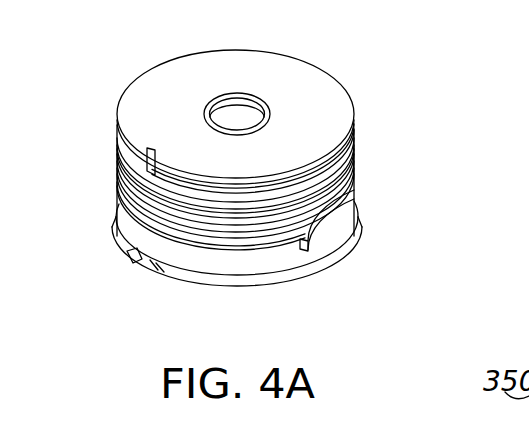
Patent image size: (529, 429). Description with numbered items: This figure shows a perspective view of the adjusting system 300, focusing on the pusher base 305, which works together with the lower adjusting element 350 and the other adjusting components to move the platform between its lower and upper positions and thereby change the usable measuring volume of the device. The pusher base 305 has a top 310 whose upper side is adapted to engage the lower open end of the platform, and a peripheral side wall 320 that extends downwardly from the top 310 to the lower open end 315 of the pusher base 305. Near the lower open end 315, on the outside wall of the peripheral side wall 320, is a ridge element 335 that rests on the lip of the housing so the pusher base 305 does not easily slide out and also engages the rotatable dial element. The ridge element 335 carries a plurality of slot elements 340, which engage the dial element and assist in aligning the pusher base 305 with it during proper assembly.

The adjusting system 300 is at (387, 135).
The pusher base 305 is at (320, 70).
The top 310 is at (183, 88).
The lower open end 315 is at (158, 268).
The peripheral side wall 320 is at (273, 265).
The ridge element 335 is at (242, 286).
The slot elements 340 is at (128, 256).
The lower adjusting element 350 is at (360, 182).